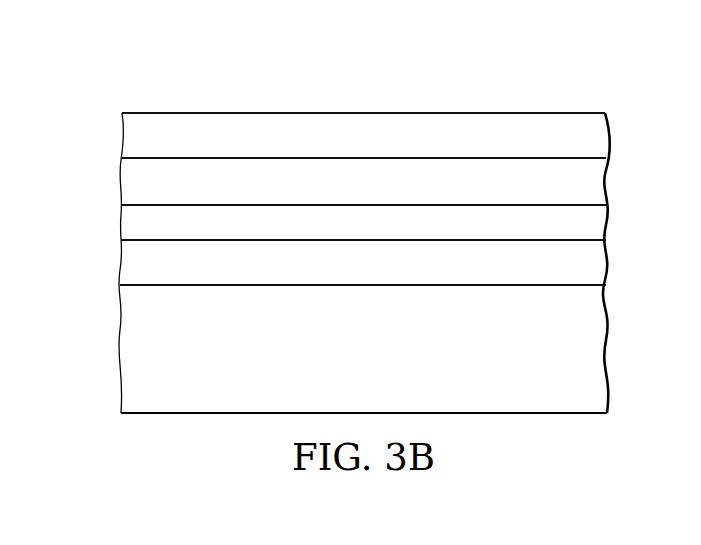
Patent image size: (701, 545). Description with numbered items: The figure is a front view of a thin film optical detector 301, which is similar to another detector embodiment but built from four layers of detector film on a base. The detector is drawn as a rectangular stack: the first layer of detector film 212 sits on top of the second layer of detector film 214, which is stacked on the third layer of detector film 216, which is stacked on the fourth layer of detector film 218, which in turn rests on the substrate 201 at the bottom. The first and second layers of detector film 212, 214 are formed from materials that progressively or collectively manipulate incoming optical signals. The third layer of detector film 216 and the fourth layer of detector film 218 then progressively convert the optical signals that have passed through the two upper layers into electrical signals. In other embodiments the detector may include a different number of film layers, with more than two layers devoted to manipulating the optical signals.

The thin film optical detector 301 is at (271, 62).
The first layer of detector film 212 is at (127, 131).
The second layer of detector film 214 is at (127, 178).
The third layer of detector film 216 is at (127, 223).
The fourth layer of detector film 218 is at (127, 263).
The substrate 201 is at (127, 351).